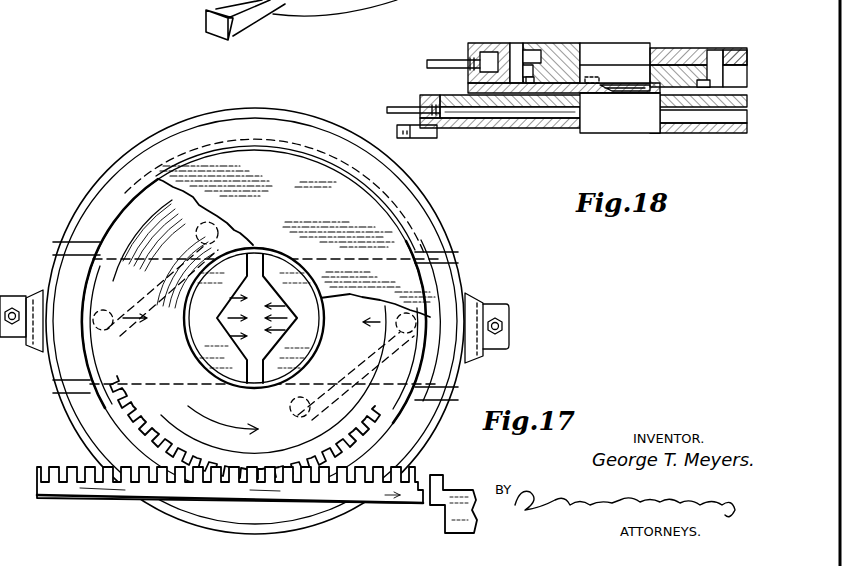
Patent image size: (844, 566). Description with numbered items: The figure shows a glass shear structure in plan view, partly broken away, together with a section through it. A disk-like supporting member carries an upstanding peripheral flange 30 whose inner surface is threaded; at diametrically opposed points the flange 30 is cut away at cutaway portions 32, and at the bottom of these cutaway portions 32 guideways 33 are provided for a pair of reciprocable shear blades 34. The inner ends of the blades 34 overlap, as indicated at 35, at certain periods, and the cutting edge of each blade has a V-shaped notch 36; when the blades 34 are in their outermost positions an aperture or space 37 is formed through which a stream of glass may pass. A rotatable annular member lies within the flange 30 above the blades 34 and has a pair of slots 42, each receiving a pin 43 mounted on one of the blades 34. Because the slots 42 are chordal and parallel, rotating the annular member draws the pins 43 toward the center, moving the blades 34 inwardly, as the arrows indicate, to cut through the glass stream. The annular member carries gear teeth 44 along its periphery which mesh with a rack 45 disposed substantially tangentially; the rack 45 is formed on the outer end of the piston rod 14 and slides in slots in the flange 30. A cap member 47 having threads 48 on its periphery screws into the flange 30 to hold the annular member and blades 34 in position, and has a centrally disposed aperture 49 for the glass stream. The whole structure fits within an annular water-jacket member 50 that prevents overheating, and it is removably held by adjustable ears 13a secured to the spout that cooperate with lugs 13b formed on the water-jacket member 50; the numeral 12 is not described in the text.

In FIG. 17, the housing ring 12 is at (115, 162).
In FIG. 17, the adjustable ears 13a is at (500, 312).
In FIG. 18, the adjustable ears 13a is at (420, 138).
In FIG. 17, the lugs 13b is at (478, 308).
In FIG. 18, the lugs 13b is at (425, 112).
In FIG. 17, the piston rod 14 is at (460, 488).
In FIG. 17, the upstanding peripheral flange 30 is at (165, 140).
In FIG. 18, the upstanding peripheral flange 30 is at (520, 43).
In FIG. 17, the cutaway portions 32 is at (440, 262).
In FIG. 18, the cutaway portions 32 is at (718, 68).
In FIG. 17, the guideways 33 is at (197, 0).
In FIG. 17, the shear blades 34 is at (455, 383).
In FIG. 18, the shear blades 34 is at (640, 94).
In FIG. 18, the overlap of blade inner ends 35 is at (620, 92).
In FIG. 17, the V-shaped notch 36 is at (272, 300).
In FIG. 17, the aperture or space 37 is at (260, 343).
In FIG. 17, the slots 42 is at (300, 412).
In FIG. 17, the pins 43 is at (405, 334).
In FIG. 17, the gear teeth 44 is at (130, 416).
In FIG. 17, the rack 45 is at (70, 466).
In FIG. 17, the cap member 47 is at (252, 165).
In FIG. 18, the cap member 47 is at (555, 43).
In FIG. 18, the threads 48 is at (712, 50).
In FIG. 18, the centrally disposed aperture 49 is at (615, 67).
In FIG. 18, the annular water-jacket member 50 is at (488, 51).